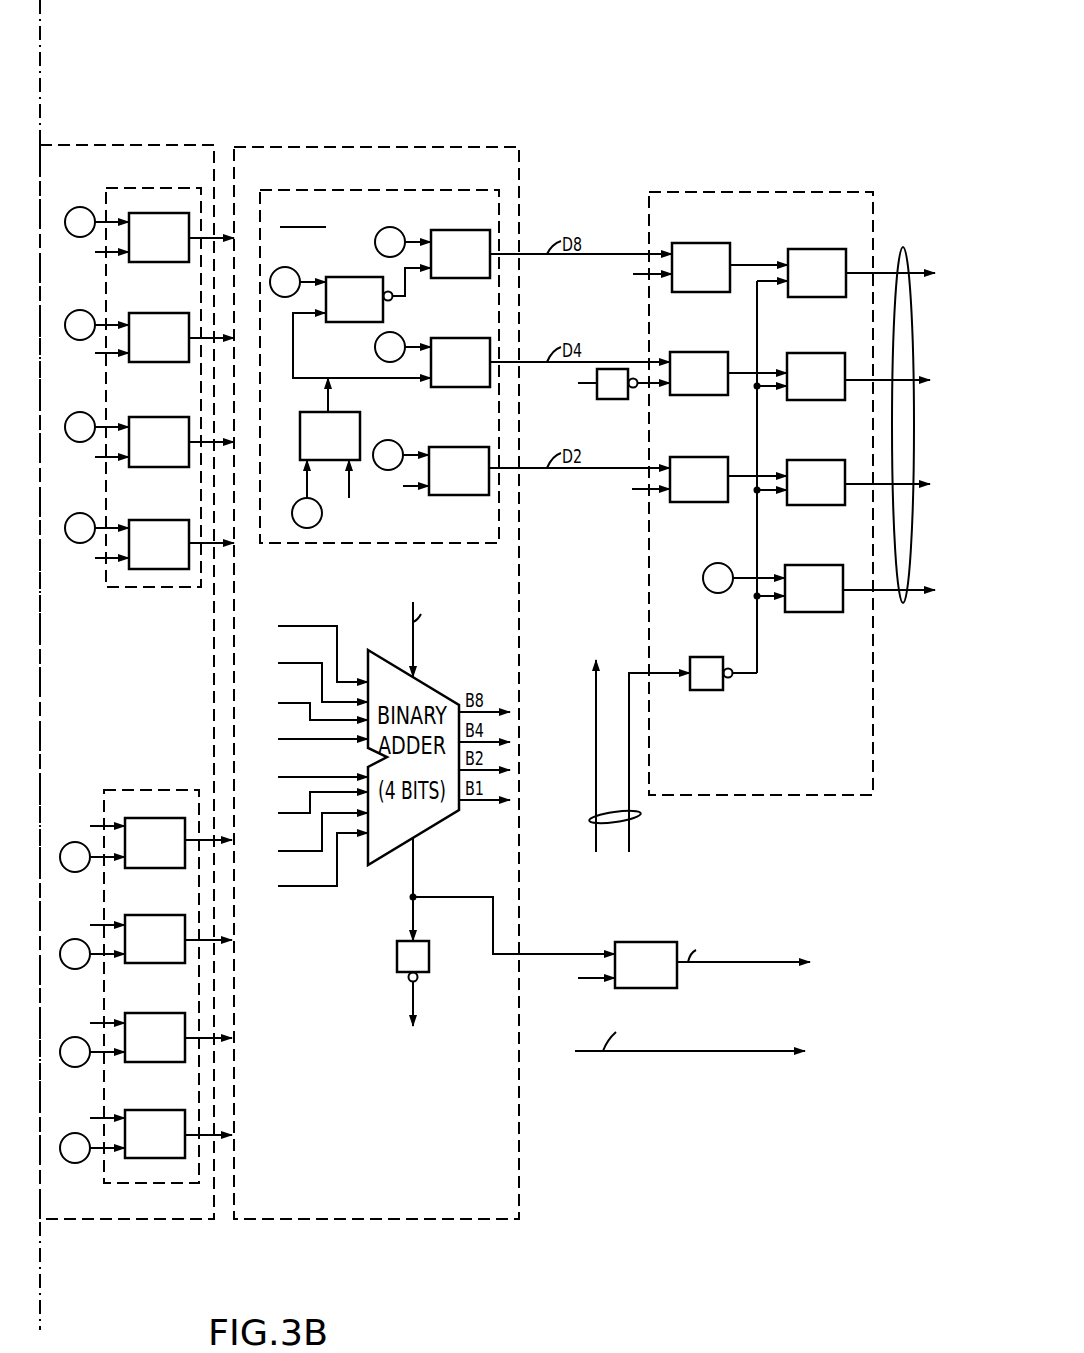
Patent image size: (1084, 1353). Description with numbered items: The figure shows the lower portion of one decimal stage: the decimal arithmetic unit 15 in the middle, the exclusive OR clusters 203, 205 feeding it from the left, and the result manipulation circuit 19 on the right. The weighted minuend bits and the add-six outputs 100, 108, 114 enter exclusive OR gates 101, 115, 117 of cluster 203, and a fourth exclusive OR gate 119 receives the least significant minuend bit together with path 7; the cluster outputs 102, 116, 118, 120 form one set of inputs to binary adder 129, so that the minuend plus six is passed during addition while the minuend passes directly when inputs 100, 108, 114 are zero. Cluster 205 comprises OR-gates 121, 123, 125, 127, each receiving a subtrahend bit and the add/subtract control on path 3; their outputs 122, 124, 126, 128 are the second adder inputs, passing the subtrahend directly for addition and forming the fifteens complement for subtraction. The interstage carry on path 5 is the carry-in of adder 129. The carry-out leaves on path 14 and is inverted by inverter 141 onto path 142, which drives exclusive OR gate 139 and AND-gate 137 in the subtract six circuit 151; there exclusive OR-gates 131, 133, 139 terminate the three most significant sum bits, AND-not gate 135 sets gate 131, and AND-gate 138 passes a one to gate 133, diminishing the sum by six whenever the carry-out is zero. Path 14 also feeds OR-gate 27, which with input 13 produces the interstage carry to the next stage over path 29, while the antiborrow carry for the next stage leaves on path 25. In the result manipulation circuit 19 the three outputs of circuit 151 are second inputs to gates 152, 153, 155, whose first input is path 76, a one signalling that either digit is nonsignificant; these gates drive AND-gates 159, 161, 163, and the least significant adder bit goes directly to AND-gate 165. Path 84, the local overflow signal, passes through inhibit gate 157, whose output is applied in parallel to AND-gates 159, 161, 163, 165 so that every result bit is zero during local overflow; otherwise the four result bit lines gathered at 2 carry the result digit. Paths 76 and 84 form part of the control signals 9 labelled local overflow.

The result output lines 2 is at (903, 262).
The add/subtract control path 3 is at (92, 972).
The interstage carry input path 5 is at (428, 625).
The interstage carry input path 7 is at (97, 558).
The control signals 9 is at (640, 813).
The input line 13 is at (581, 978).
The carry-out path 14 is at (455, 897).
The decimal arithmetic unit 15 is at (410, 147).
The result manipulation circuit 19 is at (788, 192).
The antiborrow carry path 25 is at (675, 1042).
The OR-gate 27 is at (627, 942).
The interstage carry output path 29 is at (743, 948).
The nonsignificance signal path 76 is at (610, 570).
The local overflow signal path 84 is at (652, 777).
The first cluster output 100 is at (97, 252).
The exclusive OR gate 101 is at (143, 213).
The exclusive OR cluster output 102 is at (193, 238).
The second cluster output 108 is at (97, 353).
The third cluster output 114 is at (97, 457).
The exclusive OR gate 115 is at (143, 313).
The exclusive OR cluster output 116 is at (193, 338).
The exclusive OR gate 117 is at (143, 417).
The exclusive OR cluster output 118 is at (228, 440).
The exclusive OR gate 119 is at (143, 520).
The exclusive OR cluster output 120 is at (228, 541).
The OR-gate 121 is at (140, 818).
The second cluster output 122 is at (224, 838).
The OR-gate 123 is at (140, 915).
The second cluster output 124 is at (224, 938).
The OR-gate 125 is at (140, 1013).
The second cluster output 126 is at (224, 1036).
The OR-gate 127 is at (140, 1110).
The second cluster output 128 is at (226, 1133).
The binary adder 129 is at (400, 843).
The exclusive OR-gate 131 is at (445, 230).
The exclusive OR-gate 133 is at (445, 338).
The AND-not gate 135 is at (331, 277).
The AND-gate 137 is at (333, 412).
The AND-gate 138 is at (306, 378).
The exclusive OR-gate 139 is at (443, 447).
The inverter 141 is at (429, 958).
The inverted carry-out path 142 is at (381, 759).
The subtract six circuit 151 is at (388, 190).
The OR-gate 152 is at (681, 243).
The AND-gate 153 is at (680, 352).
The OR-gate 155 is at (680, 457).
The inhibit gate 157 is at (722, 645).
The AND-gate 159 is at (796, 249).
The AND-gate 161 is at (796, 353).
The AND-gate 163 is at (796, 460).
The AND-gate 165 is at (795, 565).
The exclusive OR-gate cluster 203 is at (134, 188).
The exclusive OR-gate cluster 205 is at (130, 790).